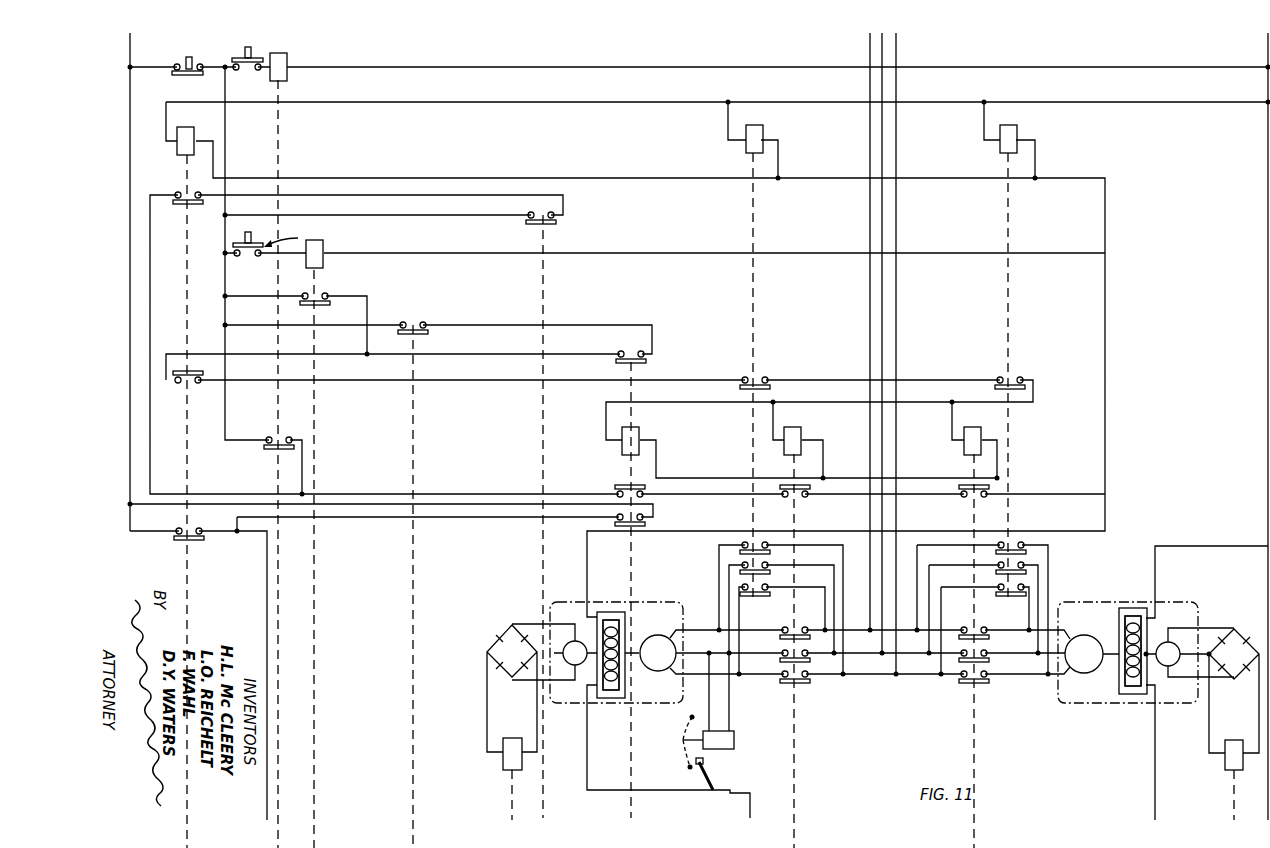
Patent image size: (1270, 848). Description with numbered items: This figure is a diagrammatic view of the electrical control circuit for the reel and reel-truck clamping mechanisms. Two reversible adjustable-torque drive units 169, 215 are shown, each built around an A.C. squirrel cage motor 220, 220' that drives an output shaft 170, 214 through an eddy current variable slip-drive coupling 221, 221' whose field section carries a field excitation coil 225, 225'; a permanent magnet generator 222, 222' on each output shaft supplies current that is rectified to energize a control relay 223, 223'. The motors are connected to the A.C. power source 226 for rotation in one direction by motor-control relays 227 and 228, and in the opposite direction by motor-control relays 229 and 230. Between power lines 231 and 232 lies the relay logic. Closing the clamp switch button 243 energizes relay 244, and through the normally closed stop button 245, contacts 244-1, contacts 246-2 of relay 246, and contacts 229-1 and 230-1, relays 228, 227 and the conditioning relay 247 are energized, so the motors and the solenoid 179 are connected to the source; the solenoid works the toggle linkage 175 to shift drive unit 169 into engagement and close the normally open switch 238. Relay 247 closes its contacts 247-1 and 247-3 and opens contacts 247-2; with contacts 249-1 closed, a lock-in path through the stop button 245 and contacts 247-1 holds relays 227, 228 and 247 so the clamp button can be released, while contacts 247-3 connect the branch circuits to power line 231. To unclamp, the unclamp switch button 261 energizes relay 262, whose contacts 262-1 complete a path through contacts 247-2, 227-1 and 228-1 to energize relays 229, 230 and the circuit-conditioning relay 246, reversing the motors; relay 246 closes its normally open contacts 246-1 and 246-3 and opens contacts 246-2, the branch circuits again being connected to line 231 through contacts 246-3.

The power line 231 is at (132, 50).
The power line 232 is at (1266, 42).
The A.C. power source 226 is at (868, 46).
The stop button 245 is at (186, 78).
The clamp switch button 243 is at (247, 72).
The relay 244 is at (288, 70).
The conditioning relay 247 is at (191, 125).
The contacts 247-1 is at (178, 202).
The contacts 247-2 is at (204, 388).
The contacts 247-3 is at (186, 534).
The contacts 249-1 is at (548, 222).
The unclamp switch button 261 is at (247, 258).
The relay 262 is at (325, 259).
The contacts 262-1 is at (322, 298).
The circuit-conditioning relay 246 is at (636, 432).
The contacts 246-1 is at (623, 352).
The contacts 246-2 is at (618, 486).
The contacts 246-3 is at (646, 523).
The motor-control relay 227 is at (757, 131).
The contacts 227-1 is at (760, 375).
The motor-control relay 228 is at (1011, 131).
The contacts 228-1 is at (1015, 376).
The motor-control relay 229 is at (796, 432).
The contacts 229-1 is at (797, 501).
The motor-control relay 230 is at (977, 431).
The contacts 230-1 is at (968, 501).
The contacts 244-1 is at (271, 450).
The output shaft 170 is at (549, 624).
The permanent magnet generator 222 is at (568, 619).
The eddy current variable slip-drive coupling 221 is at (609, 629).
The field excitation coil 225 is at (635, 625).
The A.C. squirrel cage motor 220 is at (660, 628).
The drive unit 169 is at (661, 711).
The toggle linkage 175 is at (683, 746).
The solenoid 179 is at (736, 740).
The switch 238 is at (720, 768).
The control relay 223 is at (484, 760).
The A.C. squirrel cage motor 220' is at (1084, 626).
The eddy current variable slip-drive coupling 221' is at (1123, 626).
The permanent magnet generator 222' is at (1174, 622).
The field excitation coil 225' is at (1130, 671).
The output shaft 214 is at (1186, 627).
The drive unit 215 is at (1085, 710).
The control relay 223' is at (1206, 766).